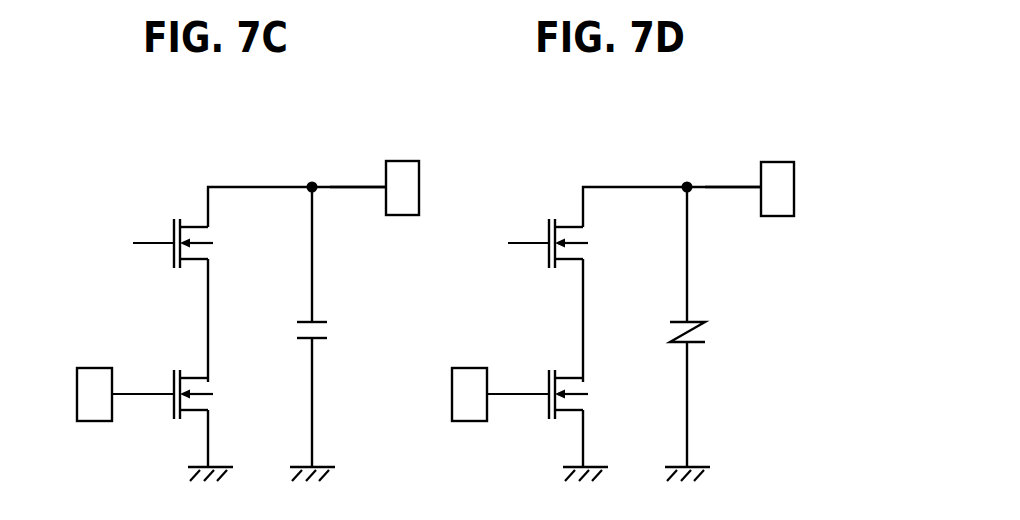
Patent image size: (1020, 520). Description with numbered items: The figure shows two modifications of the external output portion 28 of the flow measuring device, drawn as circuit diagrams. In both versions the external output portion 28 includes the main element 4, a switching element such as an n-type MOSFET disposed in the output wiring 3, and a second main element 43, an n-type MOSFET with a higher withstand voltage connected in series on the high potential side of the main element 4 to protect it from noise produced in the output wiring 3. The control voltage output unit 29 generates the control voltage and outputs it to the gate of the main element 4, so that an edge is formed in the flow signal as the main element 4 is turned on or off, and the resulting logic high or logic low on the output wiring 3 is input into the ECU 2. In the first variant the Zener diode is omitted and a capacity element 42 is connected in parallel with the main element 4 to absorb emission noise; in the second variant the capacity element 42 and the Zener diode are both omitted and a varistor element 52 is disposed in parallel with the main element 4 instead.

In FIG. 7C, the ECU 2 is at (408, 182).
In FIG. 7D, the ECU 2 is at (783, 182).
In FIG. 7C, the output wiring 3 is at (360, 186).
In FIG. 7D, the output wiring 3 is at (735, 186).
In FIG. 7C, the main element 4 is at (203, 387).
In FIG. 7D, the main element 4 is at (578, 387).
In FIG. 7C, the external output portion 28 is at (242, 172).
In FIG. 7D, the external output portion 28 is at (617, 172).
In FIG. 7C, the control voltage output unit 29 is at (92, 421).
In FIG. 7D, the control voltage output unit 29 is at (467, 421).
In FIG. 7C, the capacity element 42 is at (322, 320).
In FIG. 7C, the second main element 43 is at (205, 233).
In FIG. 7D, the second main element 43 is at (580, 233).
In FIG. 7D, the varistor element 52 is at (697, 321).